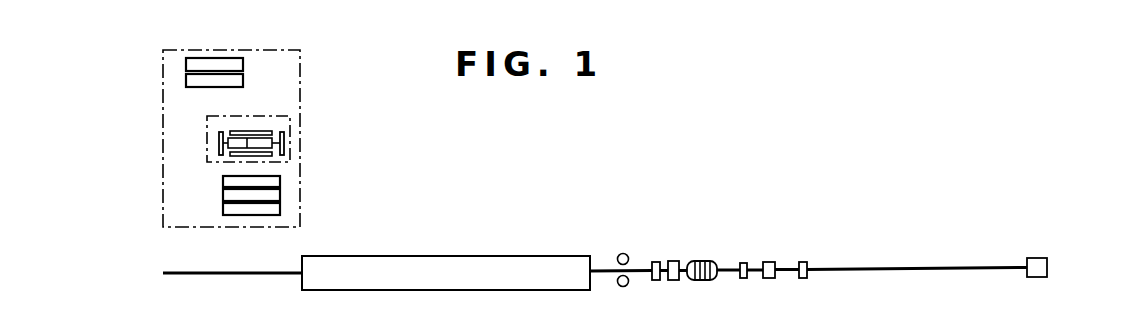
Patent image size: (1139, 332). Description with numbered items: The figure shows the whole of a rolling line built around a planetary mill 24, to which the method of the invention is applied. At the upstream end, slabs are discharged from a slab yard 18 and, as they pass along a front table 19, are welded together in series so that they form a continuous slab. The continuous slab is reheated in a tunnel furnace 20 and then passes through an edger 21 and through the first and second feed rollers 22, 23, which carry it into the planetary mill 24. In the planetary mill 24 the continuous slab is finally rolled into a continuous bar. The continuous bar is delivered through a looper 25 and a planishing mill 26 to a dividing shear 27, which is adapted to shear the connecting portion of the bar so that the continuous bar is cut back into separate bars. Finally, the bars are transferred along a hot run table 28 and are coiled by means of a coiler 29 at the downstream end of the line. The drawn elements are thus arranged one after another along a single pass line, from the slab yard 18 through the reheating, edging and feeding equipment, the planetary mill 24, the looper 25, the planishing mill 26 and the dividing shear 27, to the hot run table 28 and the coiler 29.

The slab yard 18 is at (300, 135).
The front table 19 is at (276, 272).
The tunnel furnace 20 is at (448, 255).
The edger 21 is at (616, 256).
The No. 1 feed roller 22 is at (654, 261).
The No. 2 feed roller 23 is at (673, 259).
The planetary mill 24 is at (703, 259).
The looper 25 is at (745, 260).
The planishing mill 26 is at (771, 261).
The dividing shear 27 is at (806, 261).
The hot run table 28 is at (930, 266).
The coiler 29 is at (1037, 257).